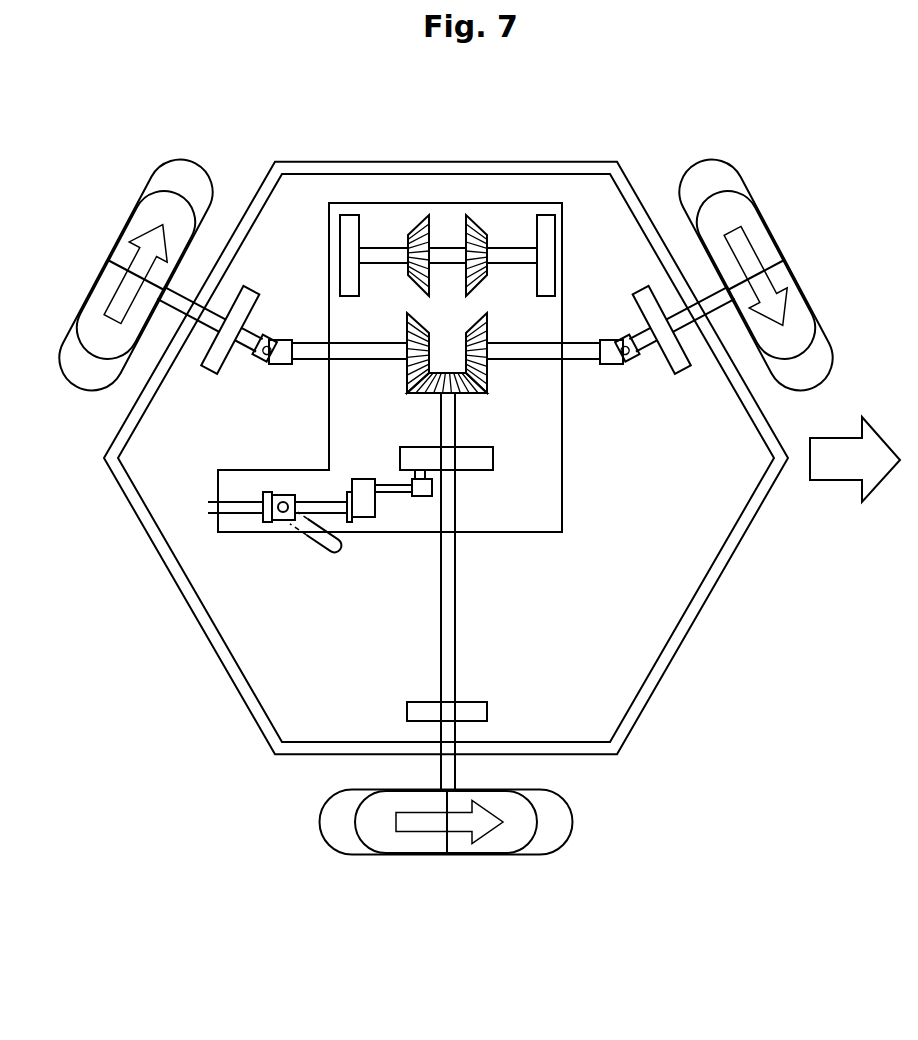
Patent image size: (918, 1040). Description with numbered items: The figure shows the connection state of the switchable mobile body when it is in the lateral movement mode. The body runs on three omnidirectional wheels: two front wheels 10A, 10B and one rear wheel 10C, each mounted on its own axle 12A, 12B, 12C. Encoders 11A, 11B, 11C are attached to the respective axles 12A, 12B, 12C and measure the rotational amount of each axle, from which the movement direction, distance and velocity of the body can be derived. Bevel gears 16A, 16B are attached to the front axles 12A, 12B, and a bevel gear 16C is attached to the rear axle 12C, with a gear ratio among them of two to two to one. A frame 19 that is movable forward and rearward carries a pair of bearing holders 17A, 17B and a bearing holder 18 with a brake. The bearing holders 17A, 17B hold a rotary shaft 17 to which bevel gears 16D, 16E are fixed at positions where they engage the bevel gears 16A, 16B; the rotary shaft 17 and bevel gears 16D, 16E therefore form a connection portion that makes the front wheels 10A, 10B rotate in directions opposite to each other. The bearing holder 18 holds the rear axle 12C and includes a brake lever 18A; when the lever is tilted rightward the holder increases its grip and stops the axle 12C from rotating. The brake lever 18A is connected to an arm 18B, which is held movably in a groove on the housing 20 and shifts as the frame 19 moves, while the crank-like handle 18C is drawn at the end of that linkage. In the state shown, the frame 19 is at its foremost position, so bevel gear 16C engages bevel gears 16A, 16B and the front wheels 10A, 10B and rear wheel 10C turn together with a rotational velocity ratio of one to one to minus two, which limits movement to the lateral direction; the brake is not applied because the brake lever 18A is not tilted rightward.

The front wheel 10A is at (760, 218).
The front wheel 10B is at (132, 215).
The rear wheel 10C is at (505, 856).
The encoder 11A is at (688, 368).
The encoder 11B is at (215, 362).
The encoder 11C is at (487, 712).
The axle 12A is at (624, 362).
The axle 12B is at (268, 360).
The axle 12C is at (456, 607).
The bevel gear 16A is at (487, 372).
The bevel gear 16B is at (407, 372).
The bevel gear 16C is at (480, 394).
The bevel gear 16D is at (484, 232).
The bevel gear 16E is at (410, 228).
The rotary shaft 17 is at (443, 250).
The bearing holder 17A is at (552, 258).
The bearing holder 17B is at (348, 258).
The bearing holder with a brake 18 is at (470, 470).
The brake lever 18A is at (420, 497).
The arm 18B is at (340, 496).
The crank handle 18C is at (327, 553).
The frame 19 is at (562, 482).
The housing 20 is at (573, 167).